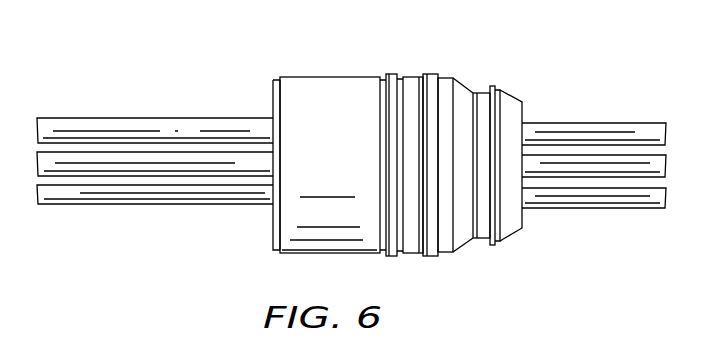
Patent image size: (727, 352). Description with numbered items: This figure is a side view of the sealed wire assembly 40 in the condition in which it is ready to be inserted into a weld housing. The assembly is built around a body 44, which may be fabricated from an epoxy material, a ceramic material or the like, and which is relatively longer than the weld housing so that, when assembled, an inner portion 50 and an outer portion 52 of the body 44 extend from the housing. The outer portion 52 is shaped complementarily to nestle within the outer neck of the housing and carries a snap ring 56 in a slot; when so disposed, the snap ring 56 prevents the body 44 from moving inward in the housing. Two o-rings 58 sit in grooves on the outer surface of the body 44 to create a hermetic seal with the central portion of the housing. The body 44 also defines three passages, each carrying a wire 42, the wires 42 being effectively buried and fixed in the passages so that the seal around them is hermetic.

The sealed wire assembly 40 is at (582, 229).
The wire 42 is at (652, 123).
The body 44 is at (363, 90).
The inner portion 50 is at (273, 82).
The outer portion 52 is at (483, 93).
The snap ring 56 is at (495, 86).
The o-ring 58 is at (432, 76).